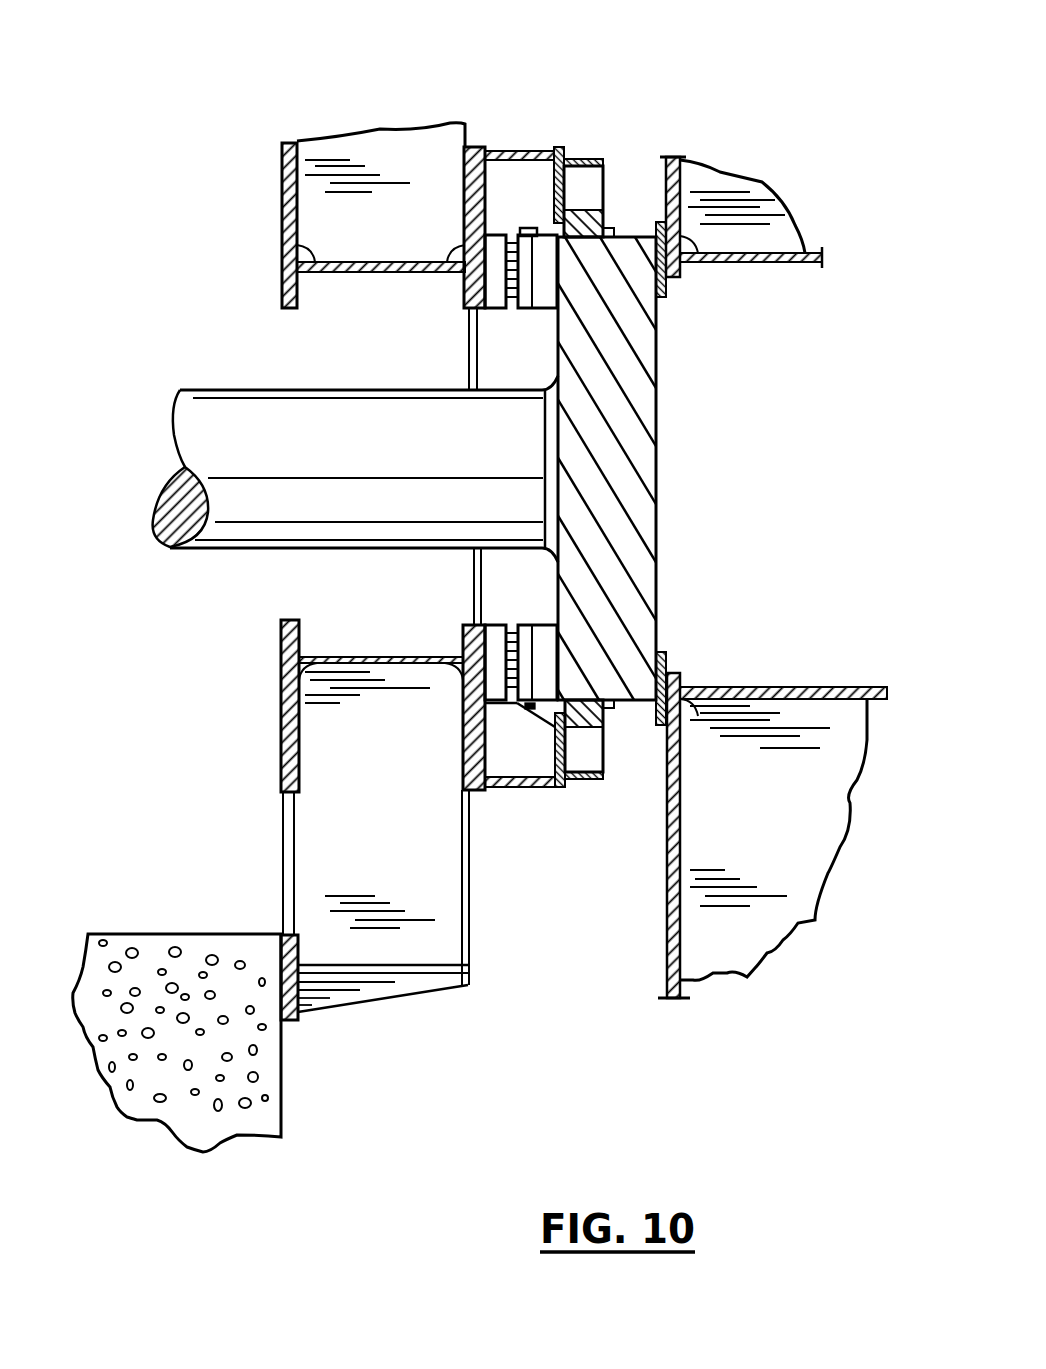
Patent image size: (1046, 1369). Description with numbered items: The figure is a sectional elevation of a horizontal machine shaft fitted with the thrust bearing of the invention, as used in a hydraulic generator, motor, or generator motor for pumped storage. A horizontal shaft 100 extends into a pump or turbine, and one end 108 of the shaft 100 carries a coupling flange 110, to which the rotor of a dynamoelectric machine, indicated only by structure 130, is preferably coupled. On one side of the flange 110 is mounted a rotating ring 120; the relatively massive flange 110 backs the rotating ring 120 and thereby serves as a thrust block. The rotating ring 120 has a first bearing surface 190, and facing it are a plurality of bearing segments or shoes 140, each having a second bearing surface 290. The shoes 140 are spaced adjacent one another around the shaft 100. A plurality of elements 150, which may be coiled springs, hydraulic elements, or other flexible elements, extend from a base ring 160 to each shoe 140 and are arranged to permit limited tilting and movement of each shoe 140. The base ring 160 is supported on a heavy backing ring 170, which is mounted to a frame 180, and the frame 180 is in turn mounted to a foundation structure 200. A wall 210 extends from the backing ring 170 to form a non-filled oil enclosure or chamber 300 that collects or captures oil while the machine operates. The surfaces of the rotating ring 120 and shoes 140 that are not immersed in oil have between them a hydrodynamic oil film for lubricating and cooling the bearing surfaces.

The horizontal shaft 100 is at (255, 388).
The one end of shaft 108 is at (517, 417).
The coupling flange 110 is at (634, 404).
The rotating ring 120 is at (547, 287).
The dynamoelectric machine structure 130 is at (787, 830).
The bearing segments or shoes 140 is at (547, 185).
The flexible elements 150 is at (500, 668).
The base ring 160 is at (520, 706).
The backing ring 170 is at (470, 290).
The frame 180 is at (402, 825).
The first bearing surface 190 is at (607, 207).
The foundation structure 200 is at (185, 935).
The wall 210 is at (528, 228).
The second bearing surface 290 is at (525, 268).
The oil enclosure or chamber 300 is at (612, 190).